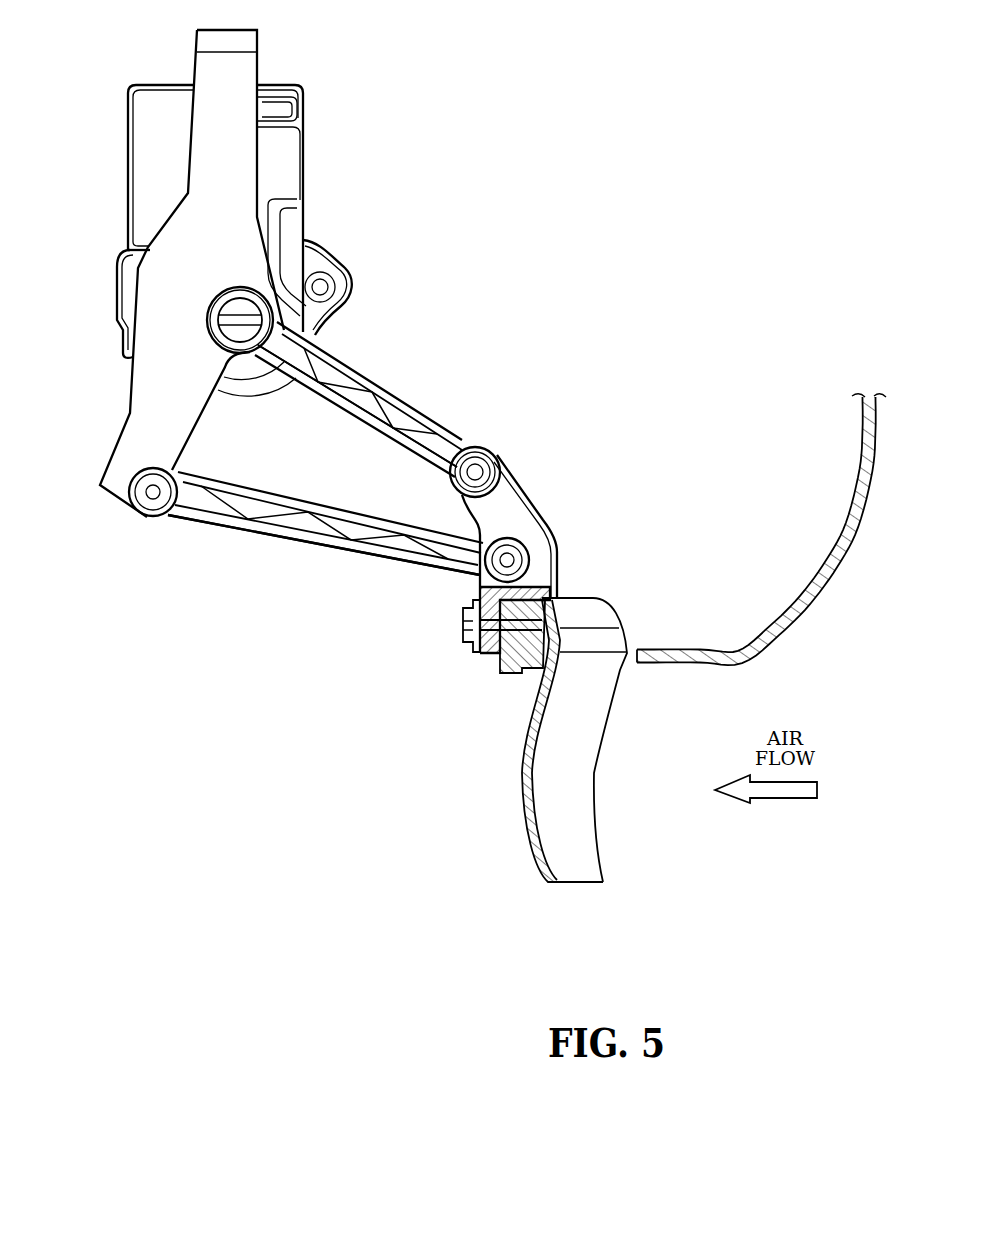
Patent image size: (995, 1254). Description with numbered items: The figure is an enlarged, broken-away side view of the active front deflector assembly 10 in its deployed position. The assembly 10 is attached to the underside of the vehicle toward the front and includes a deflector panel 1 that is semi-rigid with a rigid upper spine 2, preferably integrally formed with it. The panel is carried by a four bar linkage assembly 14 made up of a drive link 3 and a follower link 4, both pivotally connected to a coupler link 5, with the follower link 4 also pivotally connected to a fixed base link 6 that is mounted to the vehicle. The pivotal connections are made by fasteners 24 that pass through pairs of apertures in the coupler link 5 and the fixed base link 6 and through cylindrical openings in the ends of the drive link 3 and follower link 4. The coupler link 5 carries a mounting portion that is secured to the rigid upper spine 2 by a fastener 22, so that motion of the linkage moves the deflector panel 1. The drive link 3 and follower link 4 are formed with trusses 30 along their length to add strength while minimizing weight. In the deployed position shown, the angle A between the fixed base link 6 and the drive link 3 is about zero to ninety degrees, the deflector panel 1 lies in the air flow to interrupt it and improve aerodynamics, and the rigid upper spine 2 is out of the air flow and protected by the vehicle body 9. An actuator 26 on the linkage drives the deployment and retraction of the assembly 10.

The deflector panel 1 is at (522, 763).
The rigid upper spine 2 is at (507, 672).
The drive link 3 is at (395, 387).
The follower link 4 is at (330, 552).
The coupler link 5 is at (525, 493).
The fixed base link 6 is at (130, 440).
The vehicle body 9 is at (838, 555).
The active front deflector assembly 10 is at (532, 318).
The linkage assembly 14 is at (253, 566).
The fastener 22 is at (463, 625).
The fastener 24 is at (150, 500).
The actuator 26 is at (147, 155).
The truss 30 is at (340, 388).
The angle A is at (309, 396).